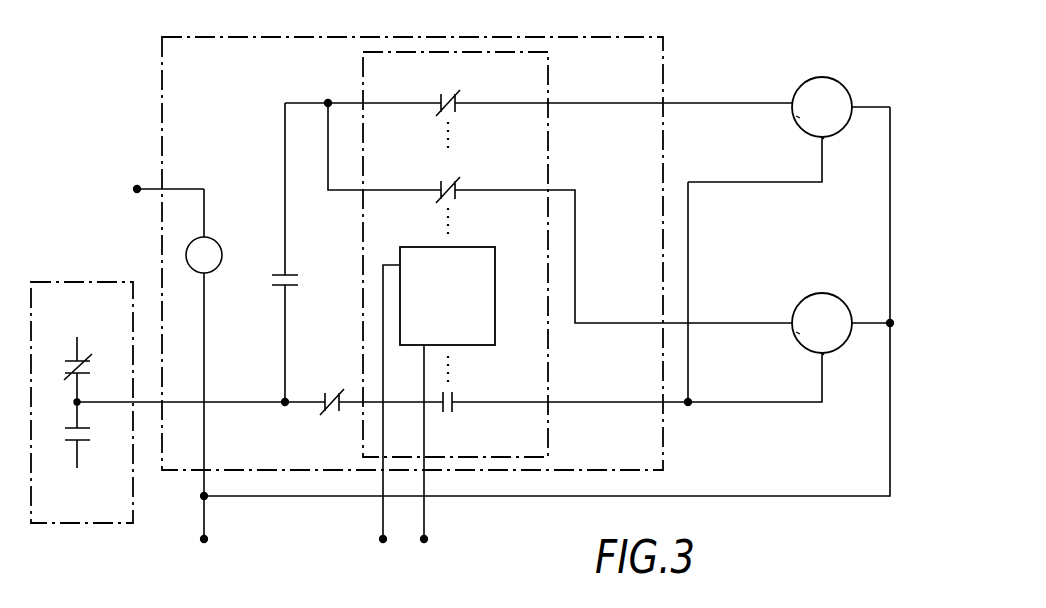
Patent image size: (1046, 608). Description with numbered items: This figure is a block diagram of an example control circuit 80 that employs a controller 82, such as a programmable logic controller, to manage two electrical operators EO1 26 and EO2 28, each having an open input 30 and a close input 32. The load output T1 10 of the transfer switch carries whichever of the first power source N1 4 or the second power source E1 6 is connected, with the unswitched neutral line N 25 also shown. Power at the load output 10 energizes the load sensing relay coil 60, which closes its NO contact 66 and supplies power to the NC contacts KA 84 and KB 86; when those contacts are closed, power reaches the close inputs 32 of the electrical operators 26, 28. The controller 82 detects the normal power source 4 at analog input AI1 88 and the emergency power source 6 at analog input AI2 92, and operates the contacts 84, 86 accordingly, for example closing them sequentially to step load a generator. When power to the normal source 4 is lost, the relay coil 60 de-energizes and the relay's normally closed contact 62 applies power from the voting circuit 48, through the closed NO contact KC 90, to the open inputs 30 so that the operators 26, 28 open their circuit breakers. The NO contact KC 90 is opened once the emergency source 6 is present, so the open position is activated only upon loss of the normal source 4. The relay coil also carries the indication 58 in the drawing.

The control circuit 80 is at (646, 37).
The controller 82 is at (363, 67).
The NC contact KA 84 is at (440, 98).
The NC contact KB 86 is at (440, 185).
The analog input AI1 88 is at (399, 260).
The NO contact KC 90 is at (456, 394).
The analog input AI2 92 is at (426, 347).
The NO contact 66 is at (293, 273).
The K1 normally closed contact 62 is at (325, 396).
The relay coil K1 58 is at (222, 236).
The load sensing K1 relay coil 60 is at (216, 269).
The load output 10 is at (145, 192).
The voting circuit 48 is at (62, 282).
The neutral line 25 is at (204, 514).
The first power source 4 is at (383, 516).
The second power source 6 is at (424, 518).
The electrical operator EO1 26 is at (841, 82).
The electrical operator EO2 28 is at (841, 298).
The open input 30 is at (828, 138).
The close input 32 is at (797, 115).